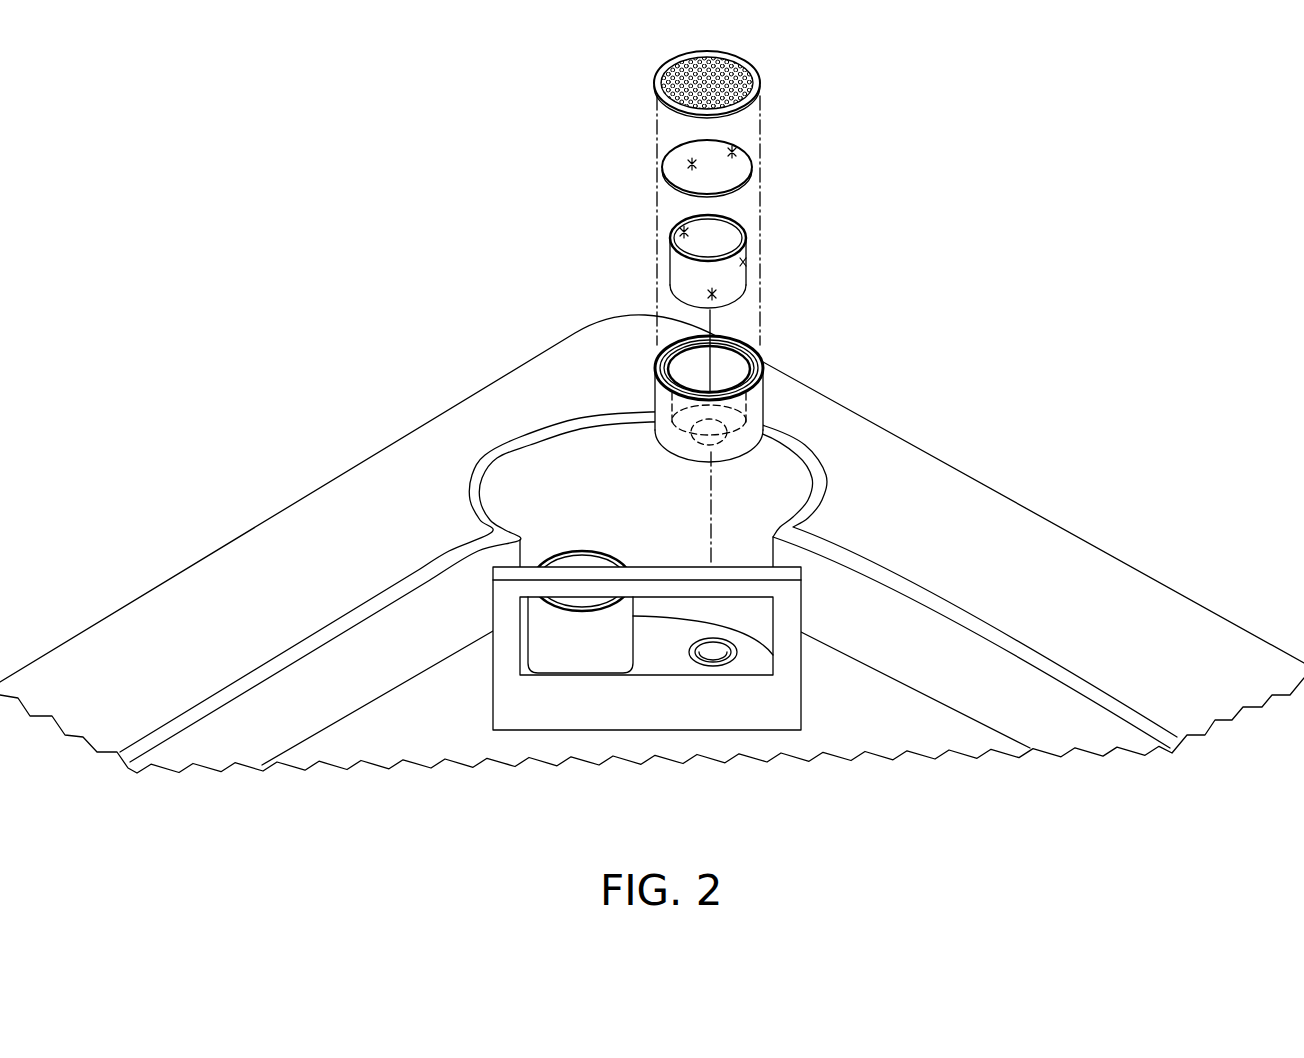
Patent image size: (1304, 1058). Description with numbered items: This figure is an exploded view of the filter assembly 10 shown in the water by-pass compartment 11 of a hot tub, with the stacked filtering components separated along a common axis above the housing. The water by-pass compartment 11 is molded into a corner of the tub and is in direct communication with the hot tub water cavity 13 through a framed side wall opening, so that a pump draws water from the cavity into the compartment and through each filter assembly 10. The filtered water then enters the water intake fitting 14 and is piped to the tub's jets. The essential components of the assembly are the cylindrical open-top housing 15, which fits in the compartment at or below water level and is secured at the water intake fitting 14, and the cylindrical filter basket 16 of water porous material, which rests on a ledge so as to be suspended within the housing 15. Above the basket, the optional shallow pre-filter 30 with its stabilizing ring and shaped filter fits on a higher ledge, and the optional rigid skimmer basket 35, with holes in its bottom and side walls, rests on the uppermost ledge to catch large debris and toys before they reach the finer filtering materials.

The filter assembly 10 is at (528, 640).
The water by-pass compartment 11 is at (782, 482).
The hot tub water cavity 13 is at (878, 707).
The water intake fitting 14 is at (713, 660).
The open-top housing 15 is at (758, 404).
The filter basket 16 is at (672, 272).
The pre-filter 30 is at (662, 167).
The skimmer basket 35 is at (655, 74).